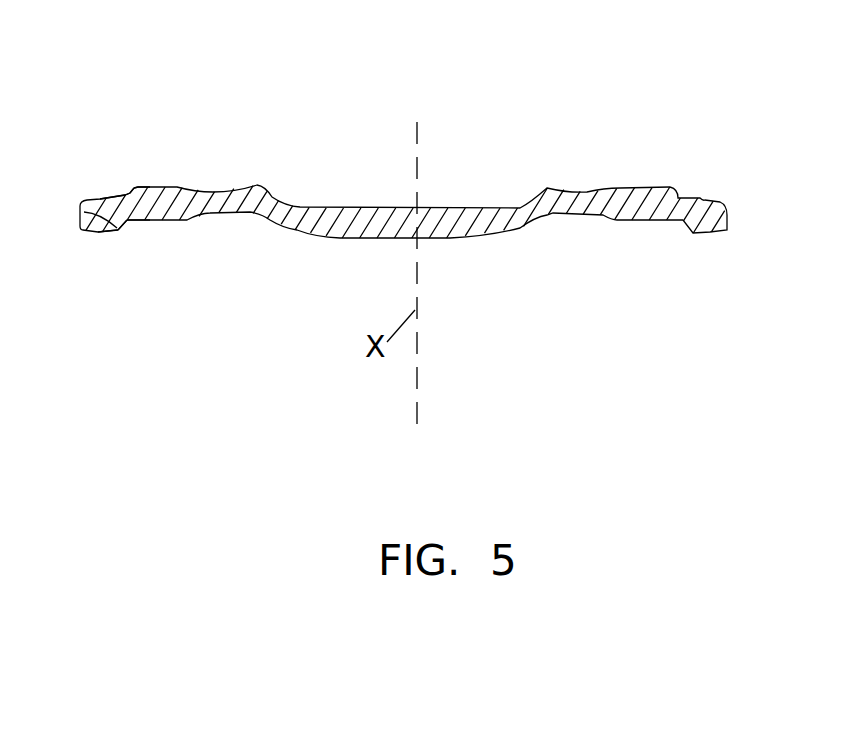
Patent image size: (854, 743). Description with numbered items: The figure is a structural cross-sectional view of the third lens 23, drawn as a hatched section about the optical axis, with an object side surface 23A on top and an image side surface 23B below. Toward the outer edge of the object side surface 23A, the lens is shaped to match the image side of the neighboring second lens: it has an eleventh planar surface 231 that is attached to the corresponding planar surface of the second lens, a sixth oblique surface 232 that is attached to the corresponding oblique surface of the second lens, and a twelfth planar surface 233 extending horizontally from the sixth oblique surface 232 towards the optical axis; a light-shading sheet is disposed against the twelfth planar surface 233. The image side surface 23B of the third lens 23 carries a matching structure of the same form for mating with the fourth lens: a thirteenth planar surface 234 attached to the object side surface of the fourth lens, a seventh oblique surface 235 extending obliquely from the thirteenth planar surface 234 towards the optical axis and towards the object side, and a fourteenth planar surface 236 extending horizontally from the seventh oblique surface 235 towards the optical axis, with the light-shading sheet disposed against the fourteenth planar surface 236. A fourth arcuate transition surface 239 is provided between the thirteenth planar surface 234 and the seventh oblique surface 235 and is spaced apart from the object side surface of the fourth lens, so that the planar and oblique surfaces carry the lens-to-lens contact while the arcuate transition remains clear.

The third lens 23 is at (733, 54).
The object side surface of the third lens 23A is at (368, 207).
The image side surface of the third lens 23B is at (458, 240).
The eleventh planar surface 231 is at (113, 193).
The sixth oblique surface 232 is at (127, 191).
The twelfth planar surface 233 is at (143, 183).
The thirteenth planar surface 234 is at (108, 234).
The seventh oblique surface 235 is at (122, 228).
The fourteenth planar surface 236 is at (143, 222).
The fourth arcuate transition surface 239 is at (89, 215).